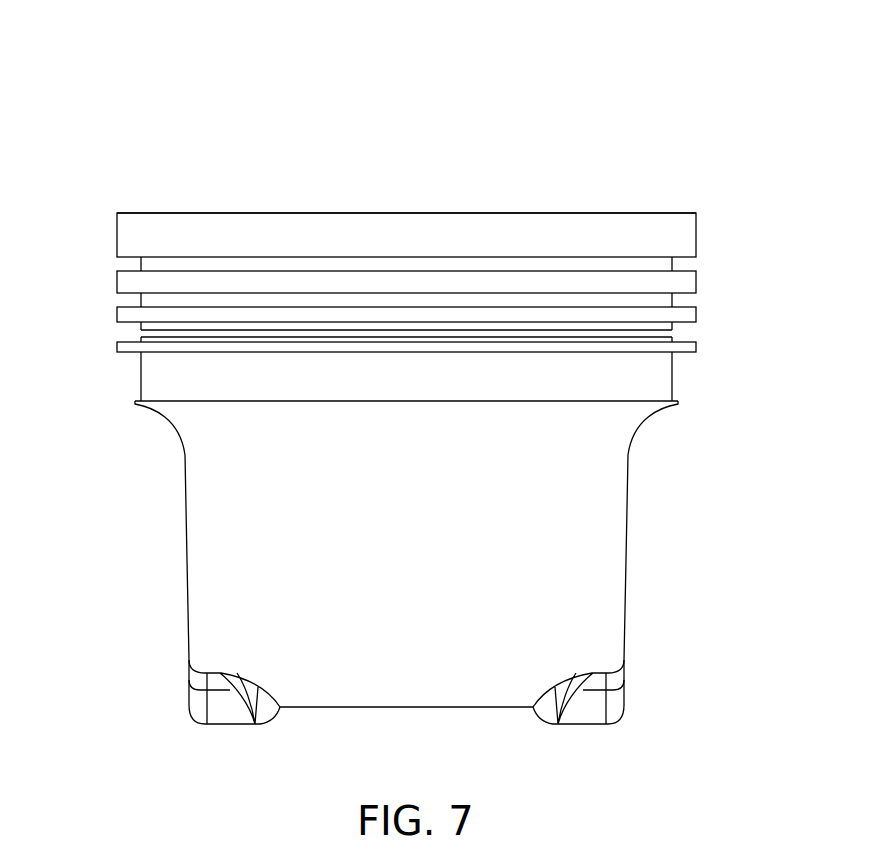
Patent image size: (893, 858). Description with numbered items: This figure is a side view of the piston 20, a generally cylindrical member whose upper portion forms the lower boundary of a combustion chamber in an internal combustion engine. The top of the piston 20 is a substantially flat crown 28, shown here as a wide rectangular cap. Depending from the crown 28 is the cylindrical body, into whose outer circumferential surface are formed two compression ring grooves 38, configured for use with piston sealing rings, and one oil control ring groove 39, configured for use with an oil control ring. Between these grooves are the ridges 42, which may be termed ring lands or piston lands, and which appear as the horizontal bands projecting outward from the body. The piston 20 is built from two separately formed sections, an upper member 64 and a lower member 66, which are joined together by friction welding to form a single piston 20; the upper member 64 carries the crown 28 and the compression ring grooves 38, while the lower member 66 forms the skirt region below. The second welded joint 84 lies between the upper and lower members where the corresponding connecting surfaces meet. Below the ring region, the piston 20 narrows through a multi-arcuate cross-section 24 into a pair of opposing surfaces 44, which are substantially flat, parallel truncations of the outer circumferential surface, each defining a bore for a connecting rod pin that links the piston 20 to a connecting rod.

The piston 20 is at (421, 388).
The multi-arcuate cross-section 24 is at (408, 448).
The crown 28 is at (455, 213).
The compression ring grooves 38 is at (688, 262).
The oil control ring groove 39 is at (688, 332).
The ridges 42 is at (117, 272).
The opposing surfaces 44 is at (407, 557).
The upper member 64 is at (406, 167).
The lower member 66 is at (406, 704).
The second welded joint 84 is at (141, 337).